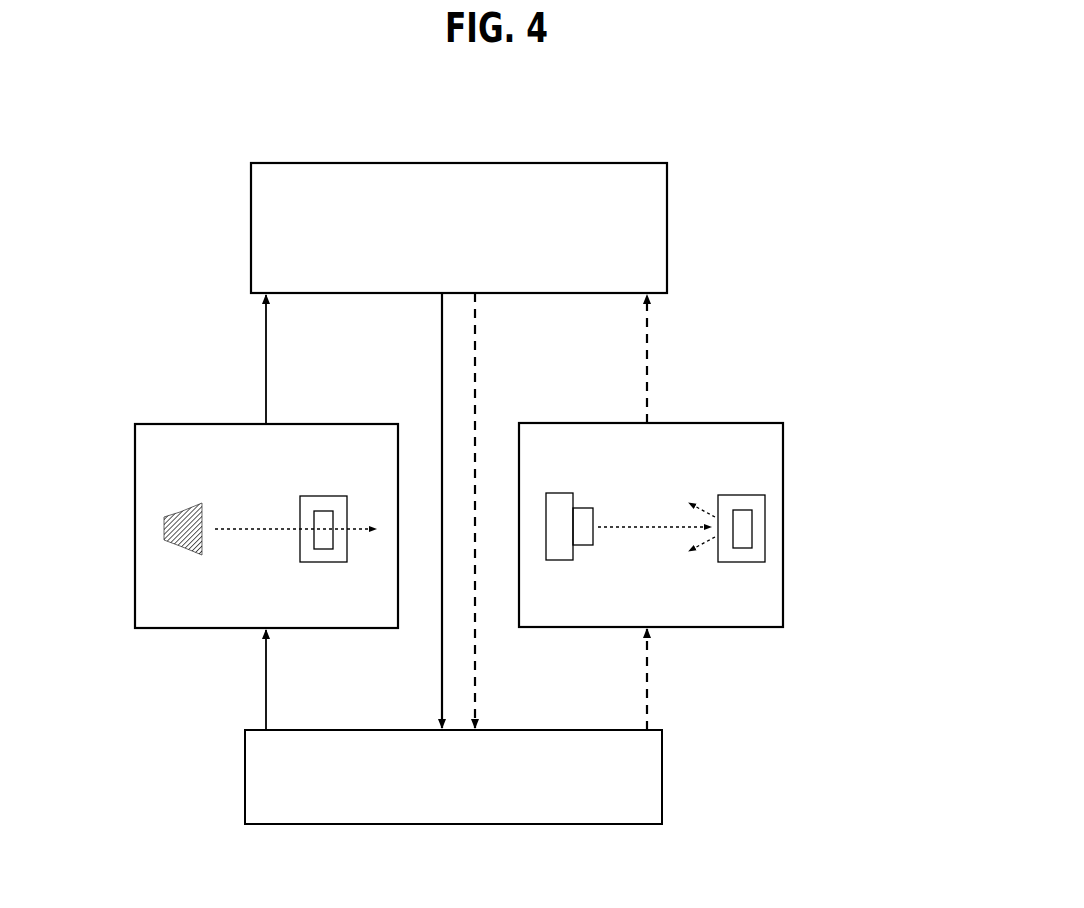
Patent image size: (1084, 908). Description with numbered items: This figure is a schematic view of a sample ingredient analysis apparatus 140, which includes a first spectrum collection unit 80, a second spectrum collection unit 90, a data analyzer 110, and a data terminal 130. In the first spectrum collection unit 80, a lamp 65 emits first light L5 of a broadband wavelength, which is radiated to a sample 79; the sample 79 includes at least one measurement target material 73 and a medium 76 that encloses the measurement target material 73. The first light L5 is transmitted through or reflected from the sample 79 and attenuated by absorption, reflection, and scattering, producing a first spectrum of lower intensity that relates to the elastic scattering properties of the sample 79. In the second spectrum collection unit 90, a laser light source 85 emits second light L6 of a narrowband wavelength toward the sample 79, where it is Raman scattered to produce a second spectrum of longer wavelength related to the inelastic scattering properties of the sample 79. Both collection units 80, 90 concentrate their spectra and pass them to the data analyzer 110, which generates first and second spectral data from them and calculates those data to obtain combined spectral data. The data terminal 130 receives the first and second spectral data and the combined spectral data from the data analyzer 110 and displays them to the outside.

The sample ingredient analysis apparatus 140 is at (877, 131).
The data analyzer 110 is at (667, 238).
The data terminal 130 is at (662, 812).
The first spectrum collection unit 80 is at (160, 630).
The second spectrum collection unit 90 is at (768, 629).
The lamp 65 is at (162, 522).
The measurement target material 73 is at (315, 511).
The medium 76 is at (335, 495).
The sample 79 is at (360, 383).
The laser light source 85 is at (561, 561).
The first light L5 is at (244, 528).
The second light L6 is at (620, 525).